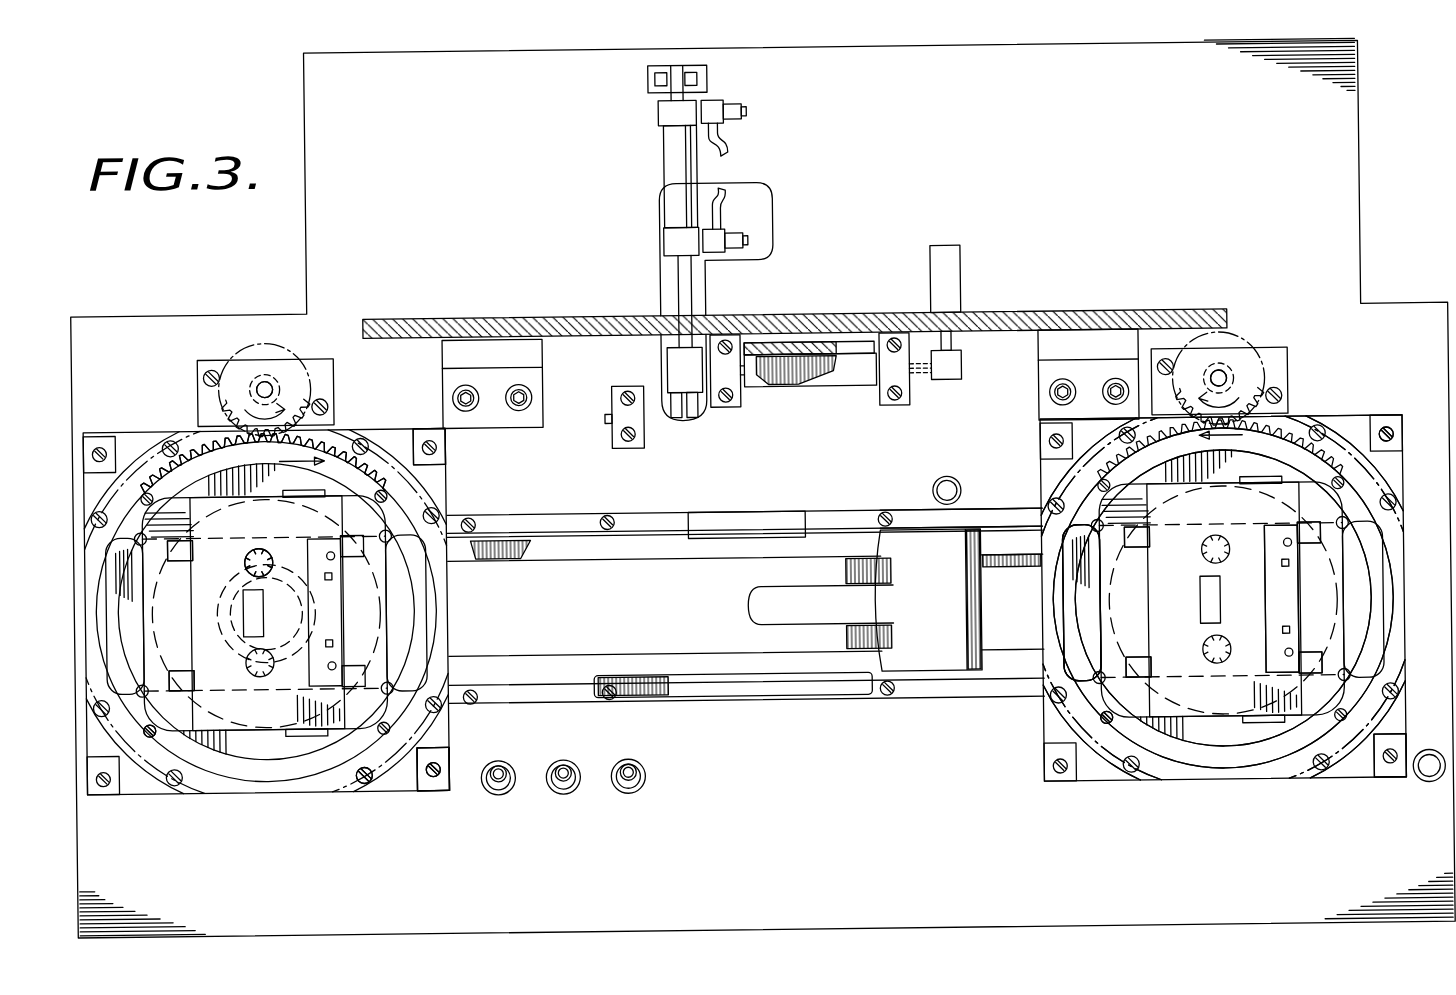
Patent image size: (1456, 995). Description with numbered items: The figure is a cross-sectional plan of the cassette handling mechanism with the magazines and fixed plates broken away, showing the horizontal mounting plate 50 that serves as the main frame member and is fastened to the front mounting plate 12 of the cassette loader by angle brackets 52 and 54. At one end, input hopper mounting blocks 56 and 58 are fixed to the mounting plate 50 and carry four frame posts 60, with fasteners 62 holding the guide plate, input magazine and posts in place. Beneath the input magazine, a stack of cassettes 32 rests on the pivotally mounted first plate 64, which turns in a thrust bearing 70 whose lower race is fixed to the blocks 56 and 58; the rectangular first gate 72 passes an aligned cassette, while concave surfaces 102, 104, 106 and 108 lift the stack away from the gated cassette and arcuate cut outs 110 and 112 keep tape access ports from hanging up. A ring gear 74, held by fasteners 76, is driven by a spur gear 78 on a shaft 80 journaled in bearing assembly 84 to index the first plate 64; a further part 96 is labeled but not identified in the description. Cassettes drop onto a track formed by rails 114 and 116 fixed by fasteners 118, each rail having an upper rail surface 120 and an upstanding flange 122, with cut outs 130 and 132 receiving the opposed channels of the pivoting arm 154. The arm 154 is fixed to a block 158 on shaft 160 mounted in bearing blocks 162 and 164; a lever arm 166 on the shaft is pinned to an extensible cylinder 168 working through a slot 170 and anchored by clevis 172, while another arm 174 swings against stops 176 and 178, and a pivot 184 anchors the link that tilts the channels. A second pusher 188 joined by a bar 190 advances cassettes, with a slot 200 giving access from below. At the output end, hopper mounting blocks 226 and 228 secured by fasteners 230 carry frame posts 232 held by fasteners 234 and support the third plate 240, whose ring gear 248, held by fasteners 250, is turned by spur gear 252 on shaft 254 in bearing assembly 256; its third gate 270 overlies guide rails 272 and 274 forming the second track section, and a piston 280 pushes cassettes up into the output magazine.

The front mounting plate 12 is at (1017, 317).
The stack of cassettes 32 is at (1170, 722).
The mounting plate 50 is at (1353, 192).
The angle bracket 52 is at (544, 368).
The angle bracket 54 is at (1040, 402).
The input hopper mounting block 56 is at (1336, 422).
The input hopper mounting block 58 is at (1398, 740).
The frame post 60 is at (1390, 782).
The fastener 62 is at (1389, 438).
The first plate 64 is at (1268, 733).
The thrust bearing 70 is at (1395, 520).
The first gate 72 is at (1105, 585).
The ring gear 74 is at (1225, 745).
The fastener 76 is at (1104, 735).
The spur gear 78 is at (1230, 342).
The shaft 80 is at (1245, 345).
The bearing assembly 84 is at (1288, 355).
The bearing ring 96 is at (1395, 710).
The concave surface 102 is at (1118, 673).
The concave surface 104 is at (1130, 525).
The concave surface 106 is at (1085, 620).
The concave surface 108 is at (1355, 590).
The arcuate cut out 110 is at (1285, 672).
The arcuate cut out 112 is at (1292, 532).
The rail 114 is at (838, 510).
The rail 116 is at (930, 692).
The fastener 118 is at (886, 514).
The upper rail surface 120 is at (592, 545).
The upstanding flange 122 is at (540, 520).
The cut out 130 is at (823, 699).
The cut out 132 is at (755, 520).
The arm 154 is at (848, 345).
The block 158 is at (785, 358).
The shaft 160 is at (922, 378).
The bearing block 162 is at (726, 335).
The bearing block 164 is at (895, 338).
The lever arm 166 is at (683, 412).
The extensible cylinder 168 is at (668, 152).
The slot 170 is at (662, 262).
The clevis 172 is at (712, 82).
The arm 174 is at (963, 372).
The stop 176 is at (963, 262).
The stop 178 is at (957, 485).
The pivot 184 is at (613, 438).
The second pusher 188 is at (980, 610).
The bar 190 is at (1013, 637).
The slot 200 is at (747, 608).
The hopper mounting block 226 is at (450, 468).
The hopper mounting block 228 is at (450, 752).
The fastener 230 is at (362, 780).
The frame post 232 is at (424, 787).
The fastener 234 is at (435, 775).
The third plate 240 is at (270, 752).
The ring gear 248 is at (140, 445).
The fastener 250 is at (148, 735).
The spur gear 252 is at (320, 372).
The shaft 254 is at (268, 384).
The bearing assembly 256 is at (335, 388).
The third gate 270 is at (385, 598).
The guide rail 272 is at (200, 555).
The guide rail 274 is at (205, 672).
The piston 280 is at (256, 552).